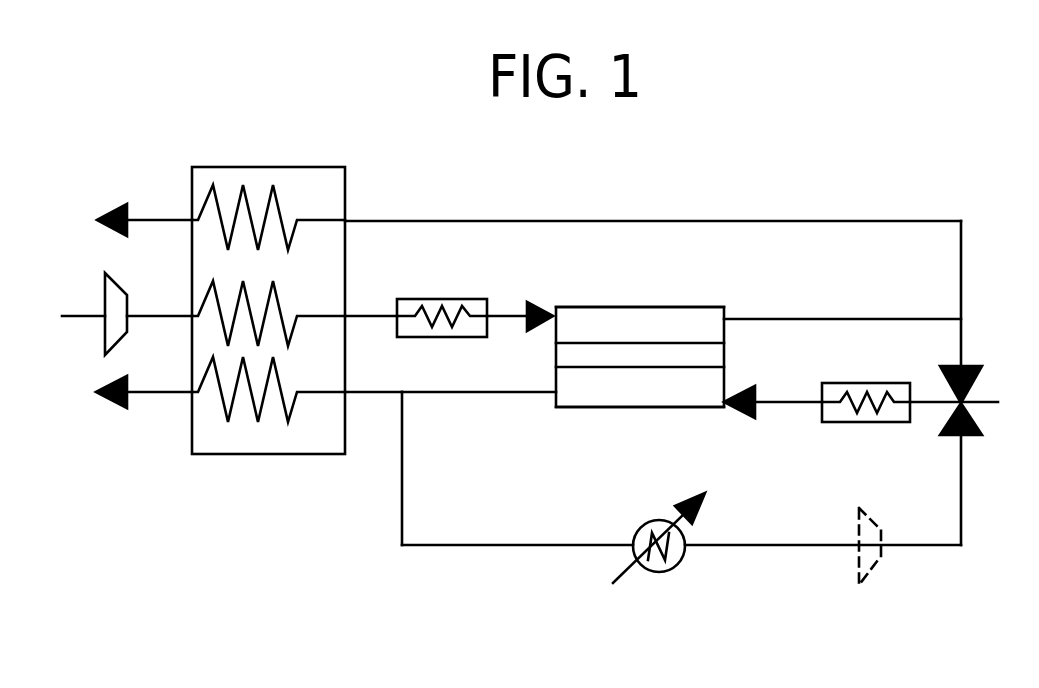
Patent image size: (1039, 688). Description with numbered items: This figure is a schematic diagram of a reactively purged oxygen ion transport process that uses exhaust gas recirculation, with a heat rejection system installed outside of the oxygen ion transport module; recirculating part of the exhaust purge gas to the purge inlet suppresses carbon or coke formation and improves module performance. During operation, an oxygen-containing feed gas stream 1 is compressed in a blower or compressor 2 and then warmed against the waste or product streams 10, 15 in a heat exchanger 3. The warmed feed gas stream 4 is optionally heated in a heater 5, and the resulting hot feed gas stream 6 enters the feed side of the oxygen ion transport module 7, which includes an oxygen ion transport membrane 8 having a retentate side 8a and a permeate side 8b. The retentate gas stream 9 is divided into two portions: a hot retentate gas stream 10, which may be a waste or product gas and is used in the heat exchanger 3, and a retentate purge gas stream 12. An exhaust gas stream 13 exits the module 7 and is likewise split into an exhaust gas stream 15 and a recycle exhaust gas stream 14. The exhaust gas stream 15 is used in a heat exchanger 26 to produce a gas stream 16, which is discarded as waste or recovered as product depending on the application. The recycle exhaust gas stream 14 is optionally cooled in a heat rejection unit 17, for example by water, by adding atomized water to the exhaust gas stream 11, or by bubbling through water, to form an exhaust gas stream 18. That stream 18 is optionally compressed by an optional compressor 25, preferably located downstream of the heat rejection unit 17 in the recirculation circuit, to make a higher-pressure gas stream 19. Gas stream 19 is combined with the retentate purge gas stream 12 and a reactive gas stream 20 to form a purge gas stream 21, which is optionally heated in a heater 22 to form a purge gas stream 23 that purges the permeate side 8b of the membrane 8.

The oxygen-containing feed gas stream 1 is at (70, 316).
The blower or compressor 2 is at (120, 280).
The heat exchanger 3 is at (162, 315).
The warmed feed gas stream 4 is at (372, 315).
The heater 5 is at (471, 299).
The hot feed gas stream 6 is at (504, 316).
The oxygen ion transport module 7 is at (600, 307).
The oxygen ion transport membrane 8 is at (556, 355).
The retentate side 8a is at (665, 343).
The permeate side 8b is at (680, 368).
The retentate gas stream 9 is at (812, 318).
The hot retentate gas stream 10 is at (483, 221).
The exhaust gas stream 11 is at (148, 219).
The retentate purge gas stream 12 is at (963, 350).
The exhaust gas stream 13 is at (430, 393).
The recycle exhaust gas stream 14 is at (402, 492).
The exhaust gas stream 15 is at (375, 393).
The gas stream 16 is at (157, 394).
The heat rejection unit 17 is at (680, 562).
The exhaust gas stream 18 is at (782, 548).
The higher-pressure gas stream 19 is at (961, 507).
The reactive gas stream 20 is at (983, 398).
The purge gas stream 21 is at (927, 400).
The heater 22 is at (853, 422).
The purge gas stream 23 is at (786, 405).
The optional compressor 25 is at (887, 560).
The heat exchanger 26 is at (273, 455).